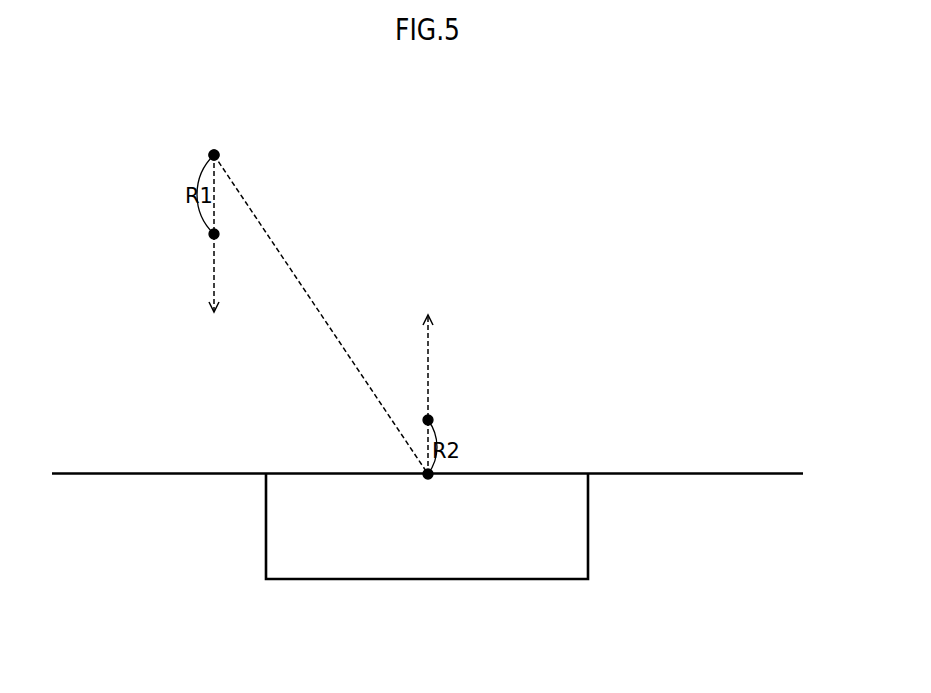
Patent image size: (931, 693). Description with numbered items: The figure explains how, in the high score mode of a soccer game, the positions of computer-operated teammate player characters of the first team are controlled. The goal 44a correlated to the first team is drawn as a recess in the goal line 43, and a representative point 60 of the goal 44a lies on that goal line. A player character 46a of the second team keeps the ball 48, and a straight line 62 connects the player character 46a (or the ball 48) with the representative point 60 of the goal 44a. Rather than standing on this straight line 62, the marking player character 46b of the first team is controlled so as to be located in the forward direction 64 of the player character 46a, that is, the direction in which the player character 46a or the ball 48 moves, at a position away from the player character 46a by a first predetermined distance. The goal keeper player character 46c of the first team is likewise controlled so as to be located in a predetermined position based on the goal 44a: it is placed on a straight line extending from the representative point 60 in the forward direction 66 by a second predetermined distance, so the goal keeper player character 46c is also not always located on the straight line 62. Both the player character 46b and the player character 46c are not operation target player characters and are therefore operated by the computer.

The goal line 43 is at (748, 475).
The goal 44a is at (588, 537).
The player character keeping the ball 46a is at (214, 153).
The ball 48 is at (240, 128).
The marking player character 46b is at (212, 235).
The goal keeper player character 46c is at (431, 420).
The representative point 60 is at (428, 480).
The straight line 62 is at (323, 312).
The forward direction 64 is at (213, 273).
The forward direction 66 is at (430, 356).